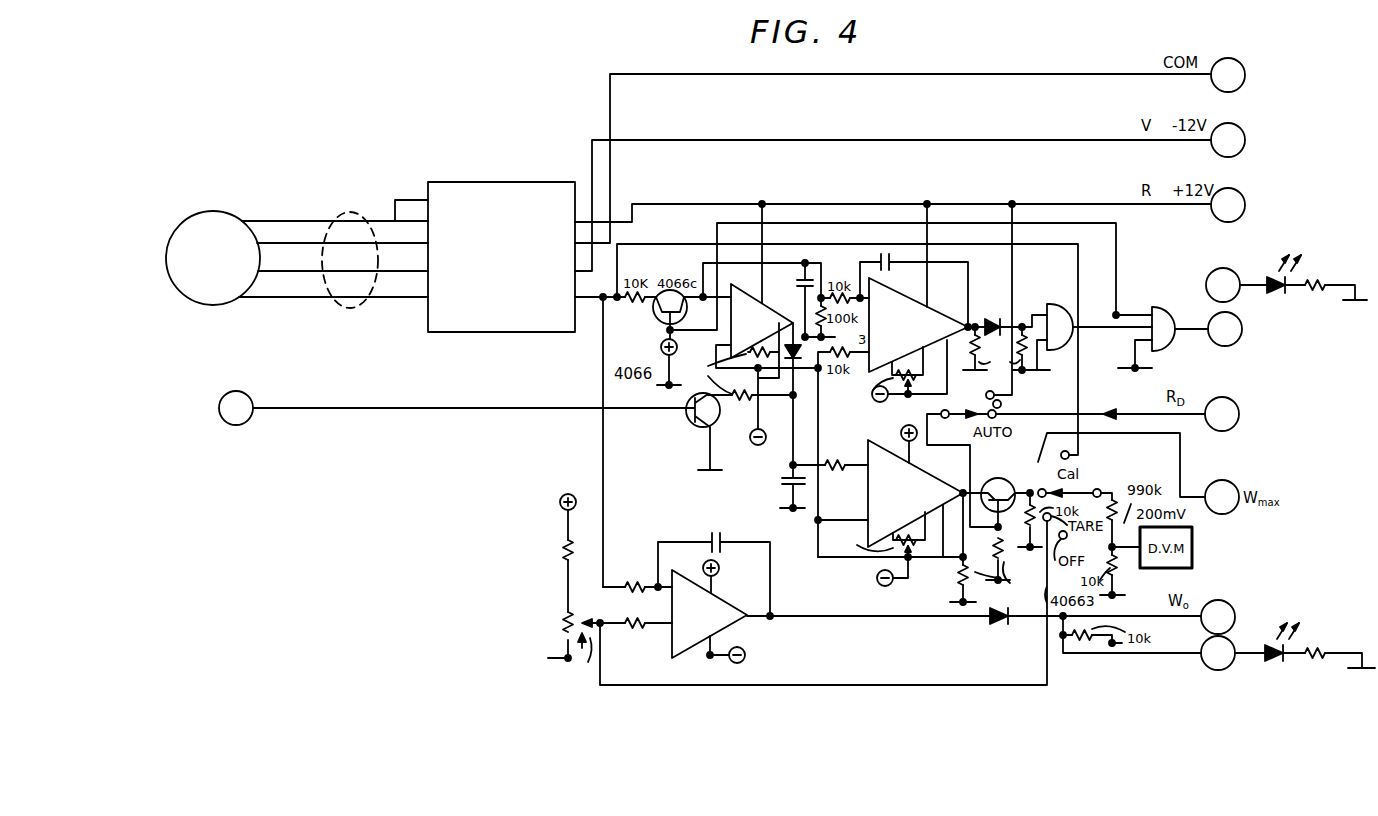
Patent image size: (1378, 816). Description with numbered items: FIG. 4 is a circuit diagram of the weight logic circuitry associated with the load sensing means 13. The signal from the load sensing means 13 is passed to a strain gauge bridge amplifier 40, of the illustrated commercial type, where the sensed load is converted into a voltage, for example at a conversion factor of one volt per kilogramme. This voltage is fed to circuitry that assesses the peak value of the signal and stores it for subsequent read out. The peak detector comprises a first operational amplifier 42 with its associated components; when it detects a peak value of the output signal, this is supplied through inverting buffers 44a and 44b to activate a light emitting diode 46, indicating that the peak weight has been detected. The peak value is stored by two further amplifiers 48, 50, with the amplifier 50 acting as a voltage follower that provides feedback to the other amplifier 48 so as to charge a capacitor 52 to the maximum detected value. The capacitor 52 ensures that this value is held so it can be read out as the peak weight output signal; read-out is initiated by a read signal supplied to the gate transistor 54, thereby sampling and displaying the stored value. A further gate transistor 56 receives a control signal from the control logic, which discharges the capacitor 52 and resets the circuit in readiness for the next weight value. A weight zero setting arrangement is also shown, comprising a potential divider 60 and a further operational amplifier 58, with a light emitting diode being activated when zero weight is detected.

The load sensing means 13 is at (205, 212).
The strain gauge bridge amplifier 40 is at (428, 332).
The further amplifier 48 is at (792, 319).
The first operational amplifier 42 is at (935, 309).
The inverting buffer 44a is at (1055, 303).
The inverting buffer 44b is at (1163, 306).
The light emitting diode 46 is at (1268, 281).
The gate transistor 56 is at (690, 424).
The capacitor 52 is at (781, 479).
The further amplifier 50 is at (866, 445).
The gate transistor 54 is at (1006, 478).
The potential divider 60 is at (562, 580).
The further operational amplifier 58 is at (746, 620).